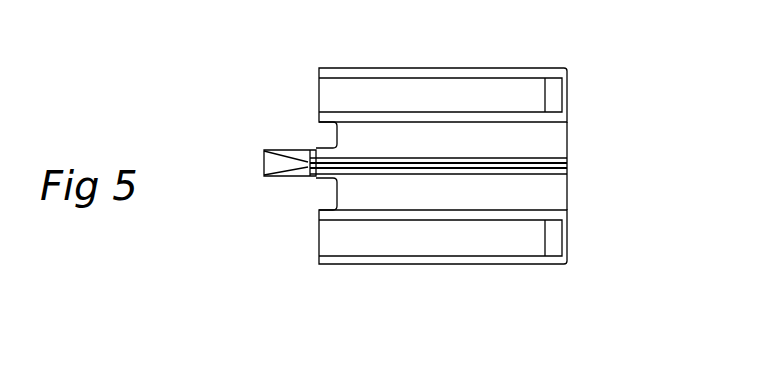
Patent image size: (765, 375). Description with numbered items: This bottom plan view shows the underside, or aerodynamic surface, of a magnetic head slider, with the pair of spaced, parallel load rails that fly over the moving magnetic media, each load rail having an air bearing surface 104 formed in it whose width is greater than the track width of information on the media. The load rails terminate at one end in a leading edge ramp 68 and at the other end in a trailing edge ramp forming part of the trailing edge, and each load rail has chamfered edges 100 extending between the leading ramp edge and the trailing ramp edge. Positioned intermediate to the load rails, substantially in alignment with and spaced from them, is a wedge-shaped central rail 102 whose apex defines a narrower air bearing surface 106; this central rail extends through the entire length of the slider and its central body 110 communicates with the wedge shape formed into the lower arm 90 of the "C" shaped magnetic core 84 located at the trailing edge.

The leading edge ramp 68 is at (567, 142).
The "C" shaped magnetic core 84 is at (250, 147).
The lower arm 90 is at (279, 176).
The chamfered edges 100 is at (567, 70).
The wedge-shaped central rail 102 is at (392, 158).
The air bearing surface 104 is at (553, 103).
The air bearing surface 106 is at (360, 160).
The central body 110 is at (555, 195).